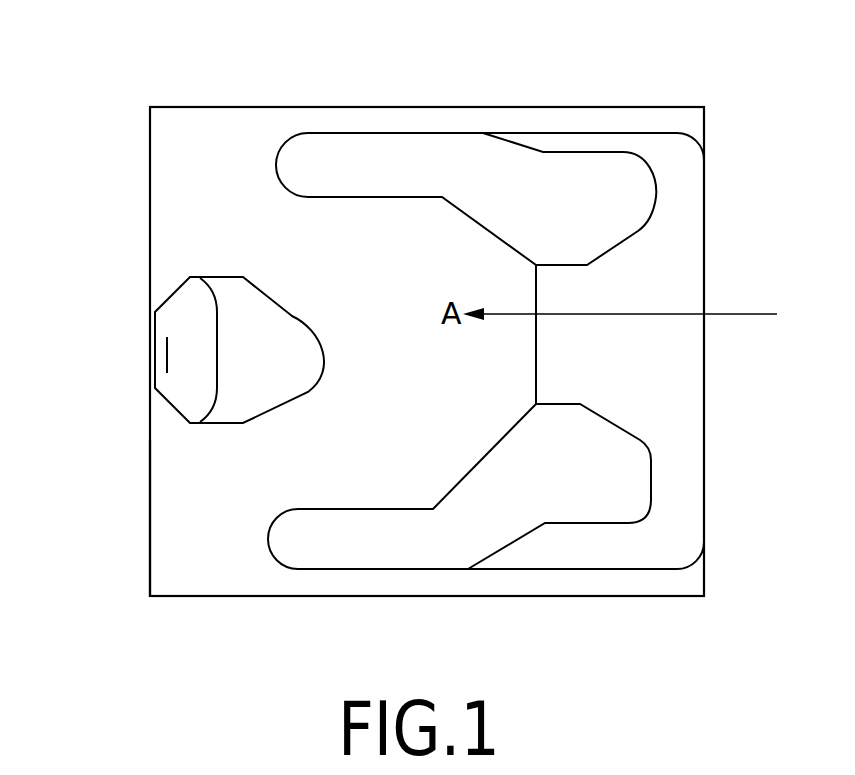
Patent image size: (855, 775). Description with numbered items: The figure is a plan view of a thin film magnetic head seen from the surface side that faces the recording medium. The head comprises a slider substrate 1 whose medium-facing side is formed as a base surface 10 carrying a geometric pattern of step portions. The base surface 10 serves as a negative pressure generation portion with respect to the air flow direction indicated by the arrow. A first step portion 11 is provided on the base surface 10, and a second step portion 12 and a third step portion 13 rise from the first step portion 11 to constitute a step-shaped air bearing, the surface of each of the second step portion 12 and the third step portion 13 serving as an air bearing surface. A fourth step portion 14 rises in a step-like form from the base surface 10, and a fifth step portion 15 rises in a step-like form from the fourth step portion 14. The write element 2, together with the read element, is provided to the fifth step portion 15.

The slider substrate 1 is at (251, 107).
The write element 2 is at (109, 355).
The base surface 10 is at (310, 467).
The first step portion 11 is at (660, 342).
The second step portion 12 is at (438, 157).
The third step portion 13 is at (447, 530).
The fourth step portion 14 is at (253, 365).
The fifth step portion 15 is at (195, 390).